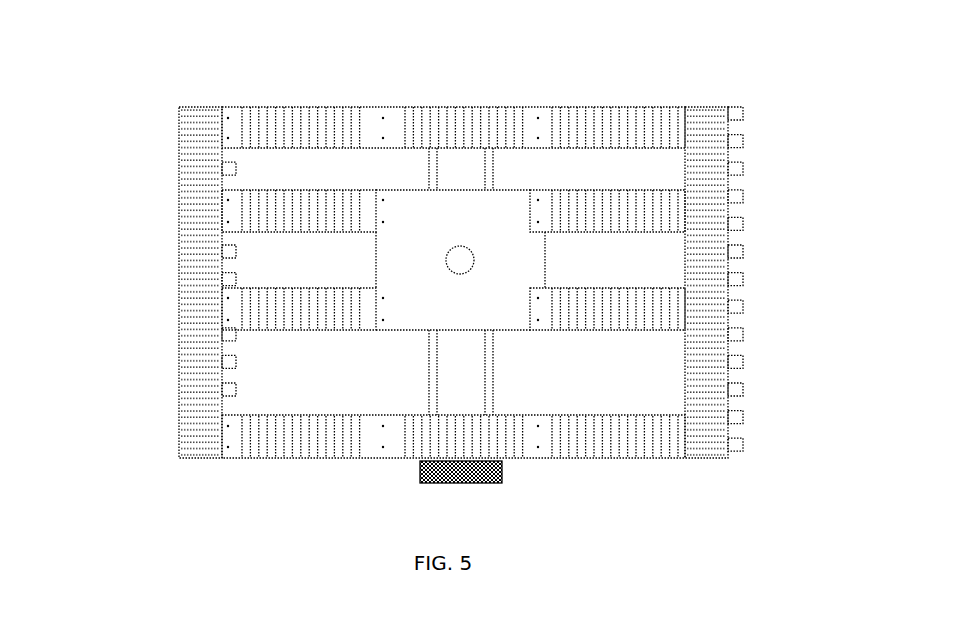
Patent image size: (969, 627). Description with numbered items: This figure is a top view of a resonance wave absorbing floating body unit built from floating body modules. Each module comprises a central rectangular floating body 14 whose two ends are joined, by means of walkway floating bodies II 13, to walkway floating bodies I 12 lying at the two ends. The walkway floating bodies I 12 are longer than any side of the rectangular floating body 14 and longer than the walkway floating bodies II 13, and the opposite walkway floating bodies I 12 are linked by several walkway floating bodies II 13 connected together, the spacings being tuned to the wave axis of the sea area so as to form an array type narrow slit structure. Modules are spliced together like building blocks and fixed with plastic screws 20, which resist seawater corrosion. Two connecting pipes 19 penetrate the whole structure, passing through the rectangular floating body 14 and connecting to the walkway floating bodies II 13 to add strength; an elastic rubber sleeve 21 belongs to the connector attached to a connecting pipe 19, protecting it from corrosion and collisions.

The walkway floating body I 12 is at (188, 283).
The walkway floating body II 13 is at (305, 437).
The rectangular floating body 14 is at (487, 240).
The connecting pipe 19 is at (493, 373).
The plastic screw 20 is at (226, 112).
The elastic rubber sleeve 21 is at (502, 470).